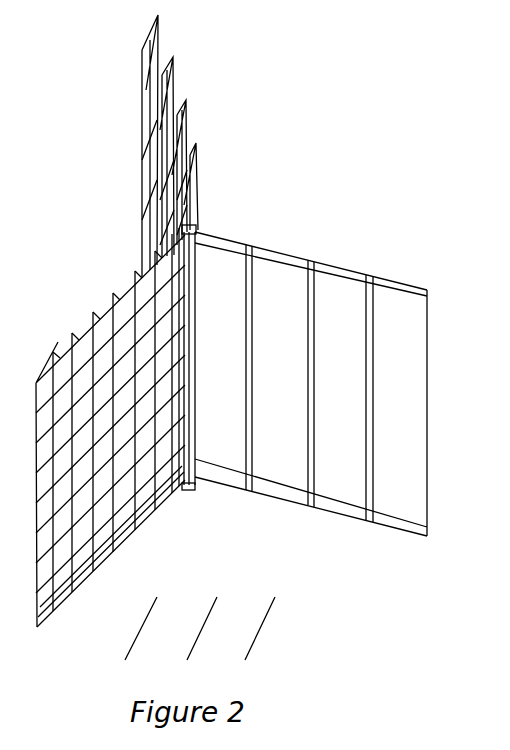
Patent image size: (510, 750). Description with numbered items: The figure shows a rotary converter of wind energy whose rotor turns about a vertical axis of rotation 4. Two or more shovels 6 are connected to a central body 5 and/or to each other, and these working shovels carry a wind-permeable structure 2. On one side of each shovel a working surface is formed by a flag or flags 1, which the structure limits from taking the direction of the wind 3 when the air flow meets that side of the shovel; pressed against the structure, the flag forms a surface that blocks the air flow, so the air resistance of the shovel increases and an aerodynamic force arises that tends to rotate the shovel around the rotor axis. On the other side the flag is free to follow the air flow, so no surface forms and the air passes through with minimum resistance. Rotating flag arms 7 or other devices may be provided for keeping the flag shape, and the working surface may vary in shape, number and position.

The flag 1 is at (311, 373).
The wind-permeable structure 2 is at (90, 557).
The direction of the wind 3 is at (258, 637).
The vertical axis of rotation 4 is at (186, 500).
The central body 5 is at (186, 488).
The shovels 6 is at (283, 250).
The rotating flag arms 7 is at (88, 327).